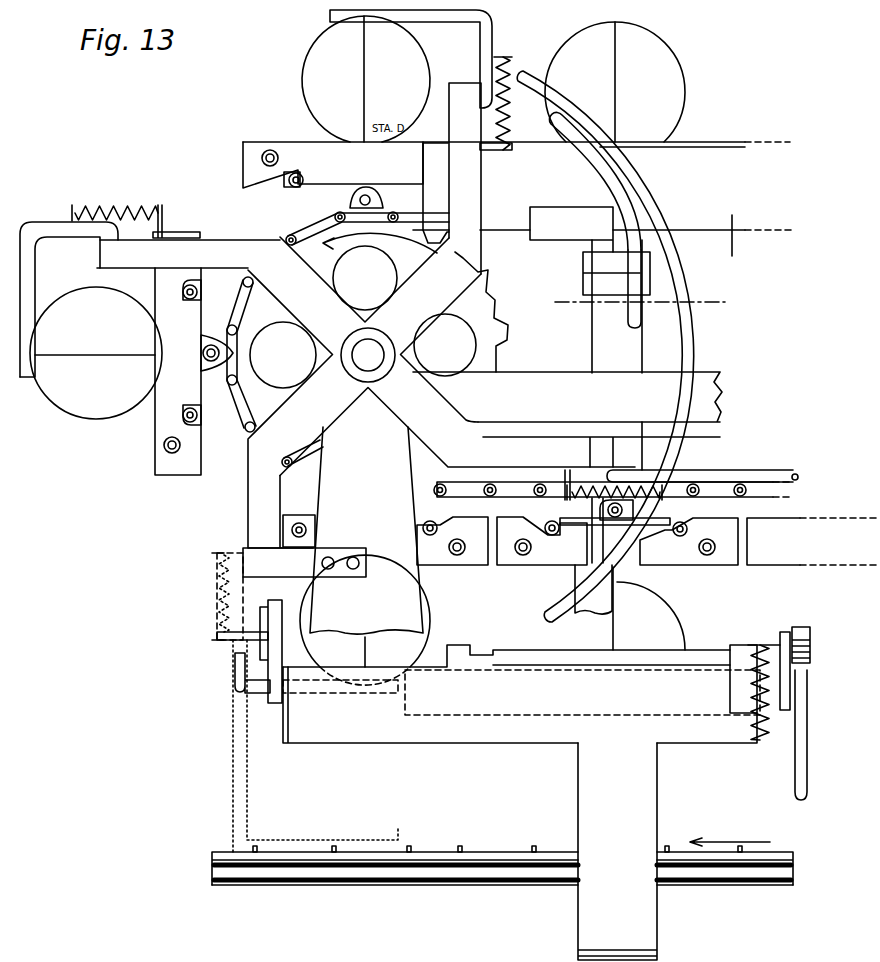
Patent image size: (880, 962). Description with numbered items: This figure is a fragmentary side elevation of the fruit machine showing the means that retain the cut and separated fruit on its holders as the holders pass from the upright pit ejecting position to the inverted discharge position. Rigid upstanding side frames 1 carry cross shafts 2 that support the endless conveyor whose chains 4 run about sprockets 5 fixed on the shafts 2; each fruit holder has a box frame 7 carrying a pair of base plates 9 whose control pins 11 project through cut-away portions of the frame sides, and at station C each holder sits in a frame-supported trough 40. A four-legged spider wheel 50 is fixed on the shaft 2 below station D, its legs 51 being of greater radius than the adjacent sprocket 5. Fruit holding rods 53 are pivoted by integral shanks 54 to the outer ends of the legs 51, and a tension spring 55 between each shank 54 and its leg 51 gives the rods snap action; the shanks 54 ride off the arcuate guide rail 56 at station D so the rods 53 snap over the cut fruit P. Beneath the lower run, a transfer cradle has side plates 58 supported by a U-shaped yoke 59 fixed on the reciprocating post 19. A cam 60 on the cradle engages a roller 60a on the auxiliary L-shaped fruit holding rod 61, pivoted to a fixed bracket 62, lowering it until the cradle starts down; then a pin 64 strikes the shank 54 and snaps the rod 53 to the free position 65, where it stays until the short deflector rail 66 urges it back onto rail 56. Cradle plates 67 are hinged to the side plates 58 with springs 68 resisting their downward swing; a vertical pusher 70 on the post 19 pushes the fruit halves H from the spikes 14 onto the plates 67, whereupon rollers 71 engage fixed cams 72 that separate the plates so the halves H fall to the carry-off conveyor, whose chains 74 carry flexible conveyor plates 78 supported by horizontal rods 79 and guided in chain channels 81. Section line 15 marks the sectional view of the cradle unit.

The side frames 1 is at (712, 395).
The cross shaft 2 is at (370, 350).
The chain 4 is at (240, 307).
The sprocket 5 is at (477, 296).
The box frame 7 is at (258, 145).
The base plate 9 is at (333, 188).
The control pin 11 is at (294, 188).
The spike 14 is at (636, 302).
The section line 15- 15 is at (182, 775).
The upstanding post 19 is at (646, 240).
The trough 40 is at (730, 247).
The spider wheel 50 is at (393, 382).
The spider leg 51 is at (188, 248).
The fruit holding rod 53 is at (404, 14).
The shank 54 is at (64, 226).
The tension spring 55 is at (121, 207).
The arcuate guide rail 56 is at (646, 190).
The side plate 58 is at (535, 700).
The yoke 59 is at (640, 812).
The cam 60 is at (278, 627).
The roller 60a is at (304, 562).
The auxiliary fruit holding rod 61 is at (331, 695).
The bracket 62 is at (313, 558).
The pin 64 is at (233, 648).
The free position of rod 65 is at (248, 792).
The deflector rail 66 is at (580, 163).
The cradle plate 67 is at (640, 712).
The spring 68 is at (755, 688).
The vertical pusher 70 is at (600, 342).
The roller 71 is at (800, 636).
The cam 72 is at (800, 753).
The endless chain 74 is at (530, 877).
The conveyor plate 78 is at (496, 856).
The horizontal rod 79 is at (420, 874).
The chain channel 81 is at (432, 855).
The fruit halves H is at (85, 358).
The cut fruit P is at (685, 90).